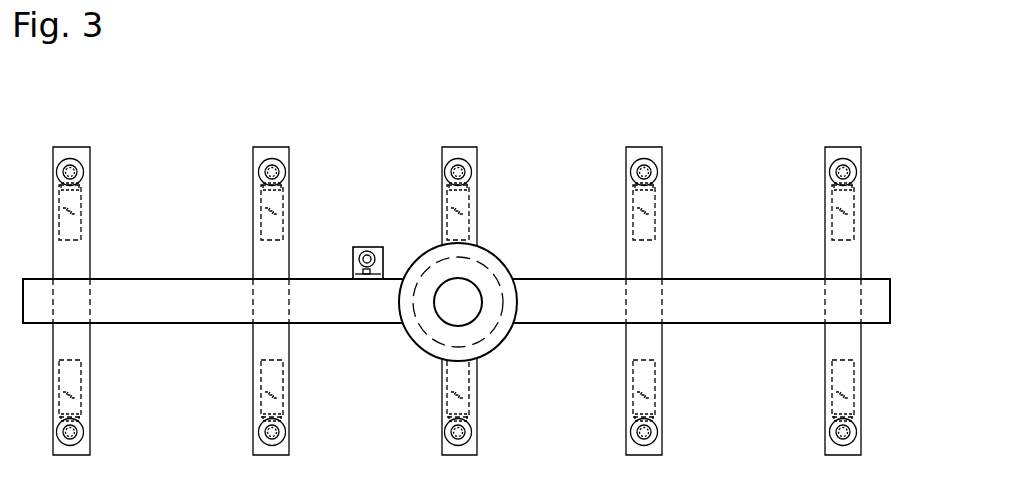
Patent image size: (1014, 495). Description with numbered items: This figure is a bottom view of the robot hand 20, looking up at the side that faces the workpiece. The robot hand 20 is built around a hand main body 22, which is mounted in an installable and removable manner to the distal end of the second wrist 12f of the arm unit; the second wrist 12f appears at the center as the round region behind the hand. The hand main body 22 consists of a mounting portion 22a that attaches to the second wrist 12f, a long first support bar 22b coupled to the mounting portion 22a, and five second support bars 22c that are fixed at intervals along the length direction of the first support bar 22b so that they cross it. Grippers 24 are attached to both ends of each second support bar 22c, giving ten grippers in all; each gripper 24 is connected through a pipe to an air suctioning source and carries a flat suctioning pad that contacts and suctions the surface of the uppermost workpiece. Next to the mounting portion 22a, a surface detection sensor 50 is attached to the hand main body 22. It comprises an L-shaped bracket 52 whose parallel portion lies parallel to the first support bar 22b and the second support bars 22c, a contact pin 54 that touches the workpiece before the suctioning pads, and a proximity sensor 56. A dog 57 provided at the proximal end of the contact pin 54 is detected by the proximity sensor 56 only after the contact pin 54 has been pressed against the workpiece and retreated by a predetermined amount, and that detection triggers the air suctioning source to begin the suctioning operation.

The robot hand 20 is at (226, 108).
The hand main body 22 is at (474, 301).
The mounting portion 22a is at (500, 263).
The first support bar 22b is at (576, 278).
The second support bars 22c is at (91, 219).
The grippers 24 is at (83, 162).
The surface detection sensor 50 is at (364, 242).
The bracket 52 is at (361, 252).
The contact pin 54 is at (368, 255).
The proximity sensor 56 is at (362, 272).
The dog 57 is at (355, 257).
The second wrist 12f is at (503, 345).